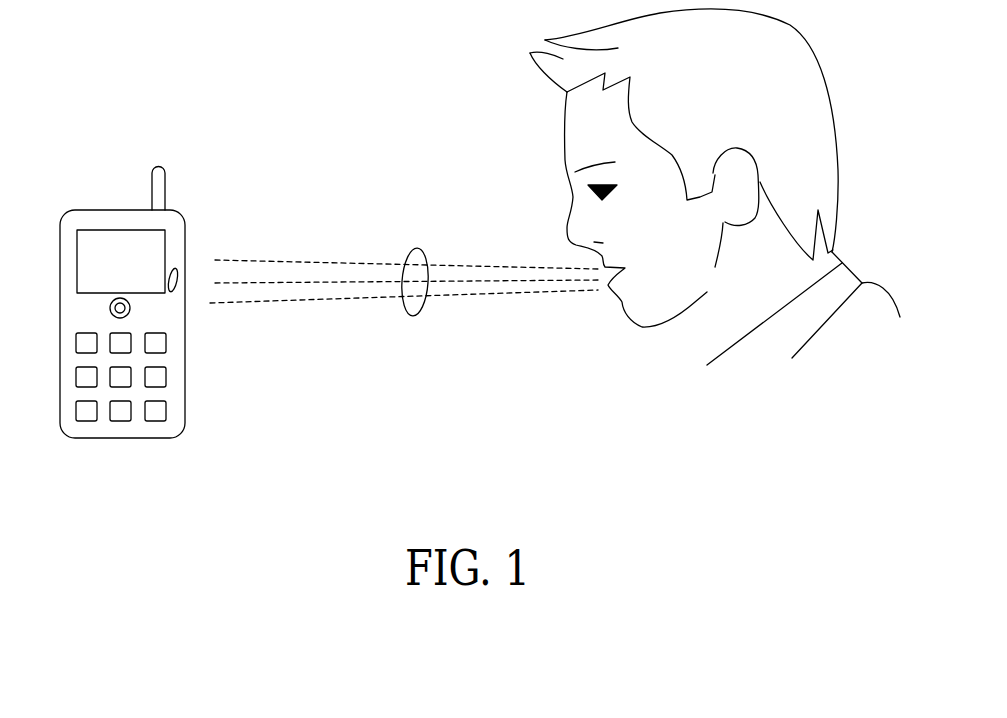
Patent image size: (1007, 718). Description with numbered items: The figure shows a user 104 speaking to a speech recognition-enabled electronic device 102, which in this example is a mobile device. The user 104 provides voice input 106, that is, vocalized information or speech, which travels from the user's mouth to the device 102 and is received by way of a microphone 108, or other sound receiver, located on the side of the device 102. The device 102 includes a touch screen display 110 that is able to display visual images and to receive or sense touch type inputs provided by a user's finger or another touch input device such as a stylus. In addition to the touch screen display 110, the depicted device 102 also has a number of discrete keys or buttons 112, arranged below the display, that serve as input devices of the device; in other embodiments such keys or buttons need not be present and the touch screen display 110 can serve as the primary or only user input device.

The speech recognition-enabled electronic device 102 is at (82, 207).
The user 104 is at (876, 80).
The voice input 106 is at (415, 316).
The microphone 108 is at (183, 270).
The touch screen display 110 is at (124, 269).
The discrete keys or buttons 112 is at (72, 313).